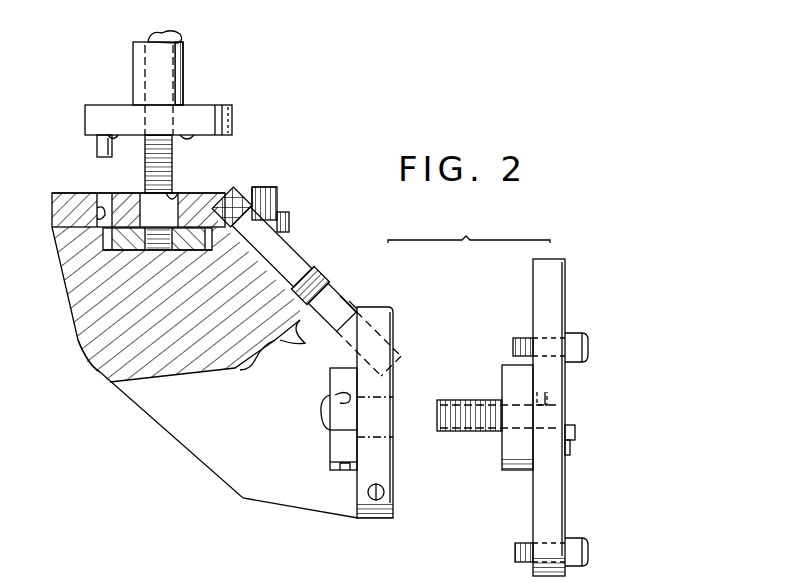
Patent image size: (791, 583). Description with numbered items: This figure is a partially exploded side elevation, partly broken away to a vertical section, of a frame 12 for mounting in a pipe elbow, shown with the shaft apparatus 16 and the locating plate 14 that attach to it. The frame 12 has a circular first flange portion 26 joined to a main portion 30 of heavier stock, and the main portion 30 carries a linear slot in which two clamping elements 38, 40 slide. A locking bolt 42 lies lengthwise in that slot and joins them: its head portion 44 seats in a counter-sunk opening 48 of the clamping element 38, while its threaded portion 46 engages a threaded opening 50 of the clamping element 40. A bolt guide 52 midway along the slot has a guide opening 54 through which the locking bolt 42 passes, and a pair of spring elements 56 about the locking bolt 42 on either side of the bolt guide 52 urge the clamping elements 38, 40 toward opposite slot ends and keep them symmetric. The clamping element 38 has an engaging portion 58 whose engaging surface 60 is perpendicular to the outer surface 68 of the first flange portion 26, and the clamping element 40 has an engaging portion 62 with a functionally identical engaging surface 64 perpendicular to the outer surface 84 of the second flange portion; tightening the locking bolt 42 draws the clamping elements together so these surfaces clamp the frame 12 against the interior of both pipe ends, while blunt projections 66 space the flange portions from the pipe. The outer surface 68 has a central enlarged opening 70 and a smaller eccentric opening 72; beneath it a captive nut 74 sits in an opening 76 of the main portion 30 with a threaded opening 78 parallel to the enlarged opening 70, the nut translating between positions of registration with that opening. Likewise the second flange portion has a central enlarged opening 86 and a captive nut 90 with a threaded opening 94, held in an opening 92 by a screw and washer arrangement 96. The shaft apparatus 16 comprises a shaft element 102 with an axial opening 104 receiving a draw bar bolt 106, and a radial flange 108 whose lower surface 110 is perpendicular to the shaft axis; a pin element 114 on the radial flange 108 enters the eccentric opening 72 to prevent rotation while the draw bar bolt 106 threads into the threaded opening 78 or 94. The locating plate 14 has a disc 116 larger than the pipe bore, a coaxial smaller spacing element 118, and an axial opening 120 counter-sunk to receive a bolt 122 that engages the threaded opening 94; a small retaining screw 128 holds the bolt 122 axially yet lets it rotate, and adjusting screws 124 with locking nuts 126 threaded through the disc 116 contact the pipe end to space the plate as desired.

The frame 12 is at (126, 423).
The locating plate 14 is at (570, 275).
The shaft apparatus 16 is at (184, 56).
The first flange portion 26 is at (52, 203).
The main portion 30 is at (188, 428).
The clamping element 38 is at (252, 192).
The clamping element 40 is at (372, 318).
The locking bolt 42 is at (285, 241).
The head portion 44 is at (242, 188).
The threaded portion 46 is at (347, 300).
The opening 48 is at (282, 222).
The threaded opening 50 is at (382, 331).
The bolt guide 52 is at (270, 352).
The guide opening 54 is at (298, 330).
The spring elements 56 is at (303, 264).
The engaging portion 58 is at (278, 196).
The engaging surface 60 is at (279, 189).
The engaging portion 62 is at (378, 305).
The engaging surface 64 is at (372, 307).
The blunt projections 66 is at (377, 500).
The outer surface 68 is at (72, 192).
The central enlarged opening 70 is at (172, 182).
The eccentric opening 72 is at (103, 229).
The captive nut 74 is at (90, 275).
The opening 76 is at (103, 245).
The threaded opening 78 is at (80, 330).
The outer surface 84 is at (394, 493).
The central enlarged opening 86 is at (393, 435).
The captive nut 90 is at (340, 442).
The opening 92 is at (343, 467).
The threaded opening 94 is at (340, 395).
The screw and washer arrangement 96 is at (323, 415).
The shaft element 102 is at (133, 50).
The axial opening 104 is at (150, 37).
The draw bar bolt 106 is at (145, 74).
The radial flange 108 is at (88, 114).
The lower surface 110 is at (208, 130).
The pin element 114 is at (97, 146).
The disc 116 is at (566, 296).
The spacing element 118 is at (518, 462).
The axial opening 120 is at (547, 407).
The bolt 122 is at (445, 400).
The adjusting screws 124 is at (589, 343).
The locking nuts 126 is at (580, 362).
The retaining screw 128 is at (577, 432).